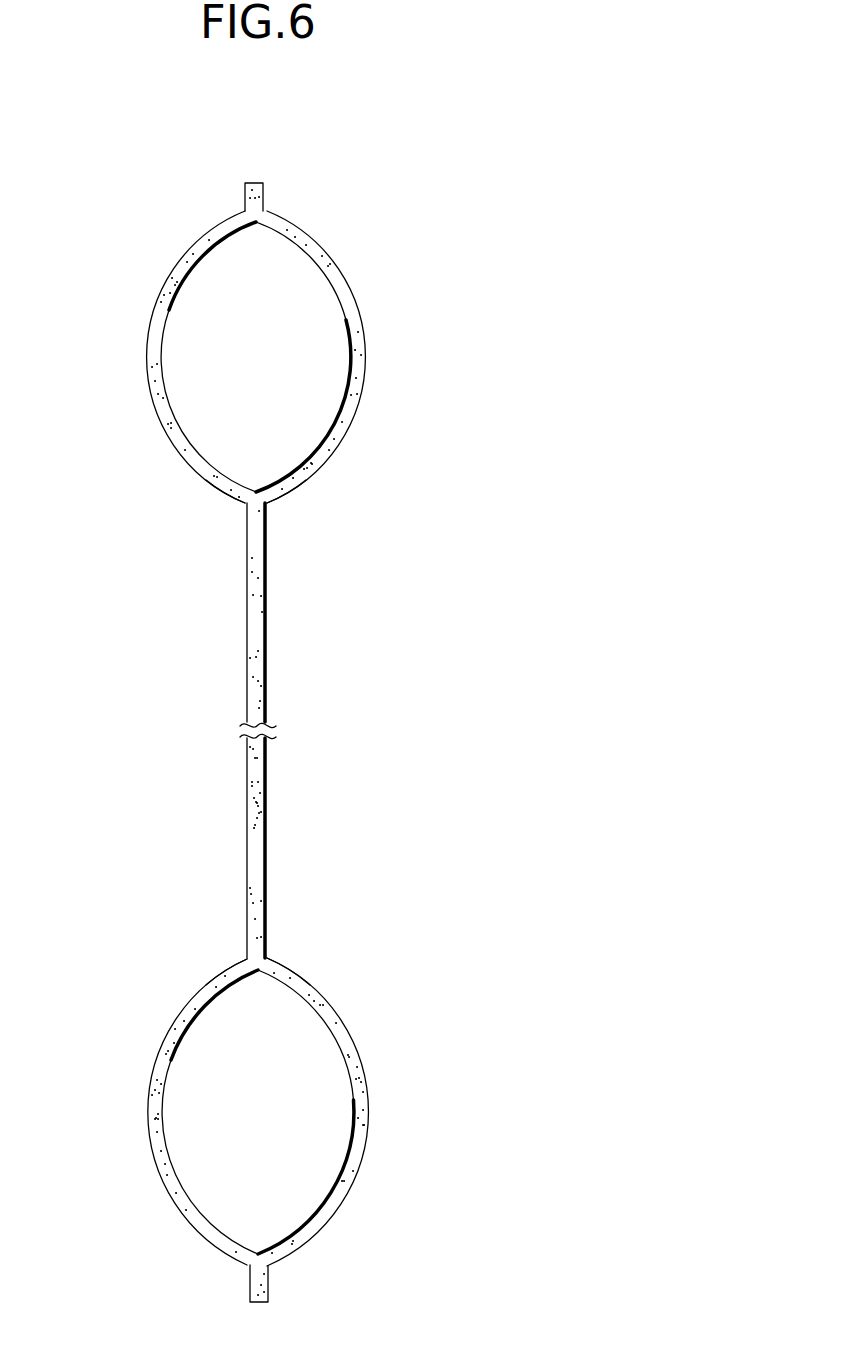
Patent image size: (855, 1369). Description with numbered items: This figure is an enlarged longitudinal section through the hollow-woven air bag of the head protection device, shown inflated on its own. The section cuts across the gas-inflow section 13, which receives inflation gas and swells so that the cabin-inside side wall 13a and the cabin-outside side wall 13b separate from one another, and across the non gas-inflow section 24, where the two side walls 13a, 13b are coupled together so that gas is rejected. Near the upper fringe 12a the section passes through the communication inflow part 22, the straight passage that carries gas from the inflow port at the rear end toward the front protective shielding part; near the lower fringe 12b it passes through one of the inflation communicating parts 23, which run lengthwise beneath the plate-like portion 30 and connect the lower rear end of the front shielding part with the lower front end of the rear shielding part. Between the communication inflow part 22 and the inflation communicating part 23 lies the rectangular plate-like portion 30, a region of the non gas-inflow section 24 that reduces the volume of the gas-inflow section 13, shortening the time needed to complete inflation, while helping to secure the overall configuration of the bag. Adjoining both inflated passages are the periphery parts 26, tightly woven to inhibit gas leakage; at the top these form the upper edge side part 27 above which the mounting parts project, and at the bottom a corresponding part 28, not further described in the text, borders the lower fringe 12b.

The upper fringe 12a is at (299, 154).
The lower fringe 12b is at (369, 1288).
The gas-inflow section 13 is at (256, 738).
The cabin-inside side wall 13a is at (148, 1113).
The cabin-outside side wall 13b is at (368, 1122).
The communication inflow part 22 is at (332, 328).
The inflation communicating parts 23 is at (256, 1112).
The non gas-inflow section 24 is at (347, 704).
The periphery parts 26 is at (347, 704).
The upper edge side part 27 is at (263, 198).
The lower terminal tab 28 is at (272, 1278).
The plate-like portion 30 is at (266, 622).